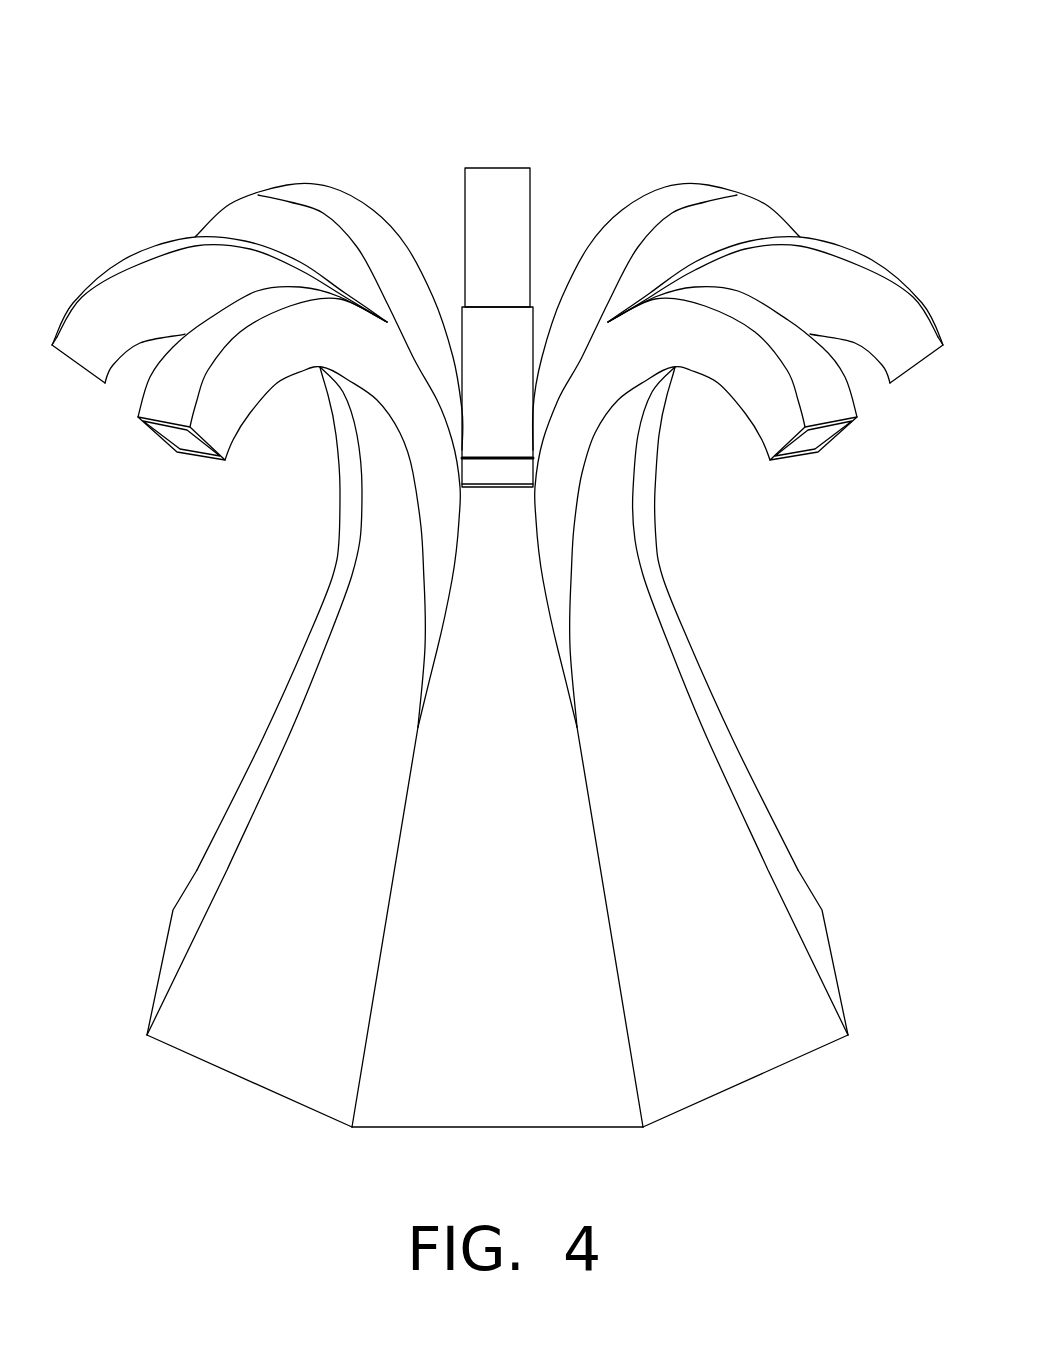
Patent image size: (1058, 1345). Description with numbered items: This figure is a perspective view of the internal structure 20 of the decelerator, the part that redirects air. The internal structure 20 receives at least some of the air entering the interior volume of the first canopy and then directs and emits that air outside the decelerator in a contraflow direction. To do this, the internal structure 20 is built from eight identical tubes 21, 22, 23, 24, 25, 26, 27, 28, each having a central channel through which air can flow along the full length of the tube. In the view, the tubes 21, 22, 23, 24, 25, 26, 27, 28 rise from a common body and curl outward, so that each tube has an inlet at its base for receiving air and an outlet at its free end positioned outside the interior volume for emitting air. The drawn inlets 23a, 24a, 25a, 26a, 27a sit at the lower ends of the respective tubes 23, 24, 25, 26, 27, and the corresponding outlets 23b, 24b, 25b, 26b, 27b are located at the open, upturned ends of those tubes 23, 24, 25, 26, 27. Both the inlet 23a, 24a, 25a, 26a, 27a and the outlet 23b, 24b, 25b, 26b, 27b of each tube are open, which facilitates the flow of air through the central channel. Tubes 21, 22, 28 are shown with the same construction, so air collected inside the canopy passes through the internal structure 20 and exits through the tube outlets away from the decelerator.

The internal structure 20 is at (153, 107).
The tube 21 is at (504, 180).
The tube 22 is at (653, 197).
The tube 23 is at (850, 250).
The inlet 23a is at (837, 973).
The outlet 23b is at (917, 362).
The tube 24 is at (753, 310).
The inlet 24a is at (747, 1083).
The outlet 24b is at (822, 430).
The tube 25 is at (520, 593).
The inlet 25a is at (497, 1128).
The outlet 25b is at (518, 472).
The tube 26 is at (230, 403).
The inlet 26a is at (250, 1083).
The outlet 26b is at (195, 447).
The tube 27 is at (158, 250).
The inlet 27a is at (160, 973).
The outlet 27b is at (77, 367).
The tube 28 is at (310, 192).